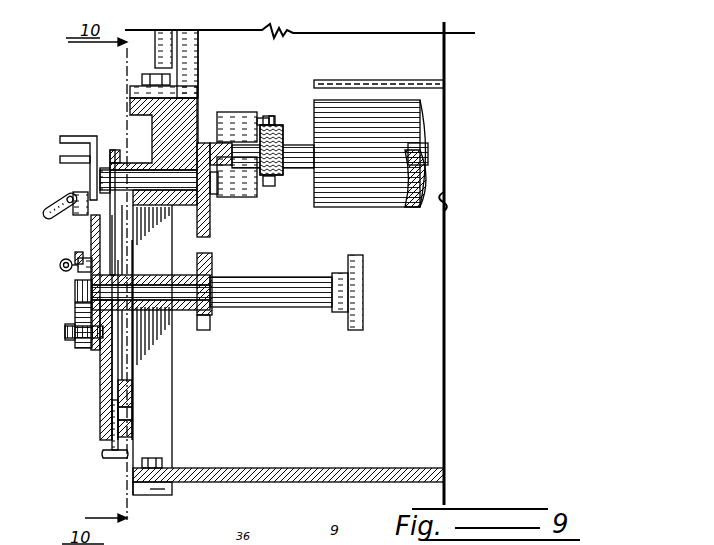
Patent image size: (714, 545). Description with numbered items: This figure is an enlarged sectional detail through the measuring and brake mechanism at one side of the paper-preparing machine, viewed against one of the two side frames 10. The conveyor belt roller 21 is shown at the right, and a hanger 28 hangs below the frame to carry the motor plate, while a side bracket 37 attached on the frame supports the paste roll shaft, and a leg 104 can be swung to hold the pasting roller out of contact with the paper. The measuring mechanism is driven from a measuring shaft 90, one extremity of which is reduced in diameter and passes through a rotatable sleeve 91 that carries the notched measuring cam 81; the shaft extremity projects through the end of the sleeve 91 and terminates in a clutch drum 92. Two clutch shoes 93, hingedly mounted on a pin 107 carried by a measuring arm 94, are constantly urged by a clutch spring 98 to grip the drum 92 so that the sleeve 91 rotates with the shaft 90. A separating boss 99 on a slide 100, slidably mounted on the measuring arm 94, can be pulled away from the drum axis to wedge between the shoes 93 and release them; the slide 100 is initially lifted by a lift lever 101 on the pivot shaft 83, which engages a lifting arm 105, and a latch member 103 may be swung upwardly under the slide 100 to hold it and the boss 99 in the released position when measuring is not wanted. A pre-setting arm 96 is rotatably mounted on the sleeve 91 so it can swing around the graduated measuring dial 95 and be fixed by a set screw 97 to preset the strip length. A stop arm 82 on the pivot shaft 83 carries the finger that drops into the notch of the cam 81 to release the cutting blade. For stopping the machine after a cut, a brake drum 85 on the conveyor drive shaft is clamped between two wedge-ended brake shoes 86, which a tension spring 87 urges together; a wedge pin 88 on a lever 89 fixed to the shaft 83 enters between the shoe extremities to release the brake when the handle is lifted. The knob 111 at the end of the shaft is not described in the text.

The side frame 10 is at (150, 125).
The belt roller 21 is at (357, 198).
The hanger 28 is at (170, 442).
The side bracket 37 is at (193, 65).
The notched measuring cam 81 is at (213, 323).
The stop arm 82 is at (212, 230).
The pivot shaft 83 is at (181, 182).
The brake drum 85 is at (285, 172).
The brake shoe 86 is at (245, 112).
The tension spring 87 is at (275, 135).
The wedge pin 88 is at (205, 143).
The lever 89 is at (228, 195).
The measuring shaft 90 is at (304, 306).
The rotatable sleeve 91 is at (152, 275).
The clutch drum 92 is at (76, 306).
The clutch shoe 93 is at (76, 256).
The measuring arm 94 is at (97, 231).
The measuring dial 95 is at (112, 408).
The pre-setting arm 96 is at (104, 374).
The set screw 97 is at (112, 456).
The clutch spring 98 is at (60, 268).
The separating boss 99 is at (80, 272).
The slide 100 is at (86, 179).
The lift lever 101 is at (117, 232).
The latch member 103 is at (47, 210).
The leg 104 is at (160, 52).
The lifting arm 105 is at (110, 165).
The pin 107 is at (68, 338).
The knob 111 is at (362, 262).